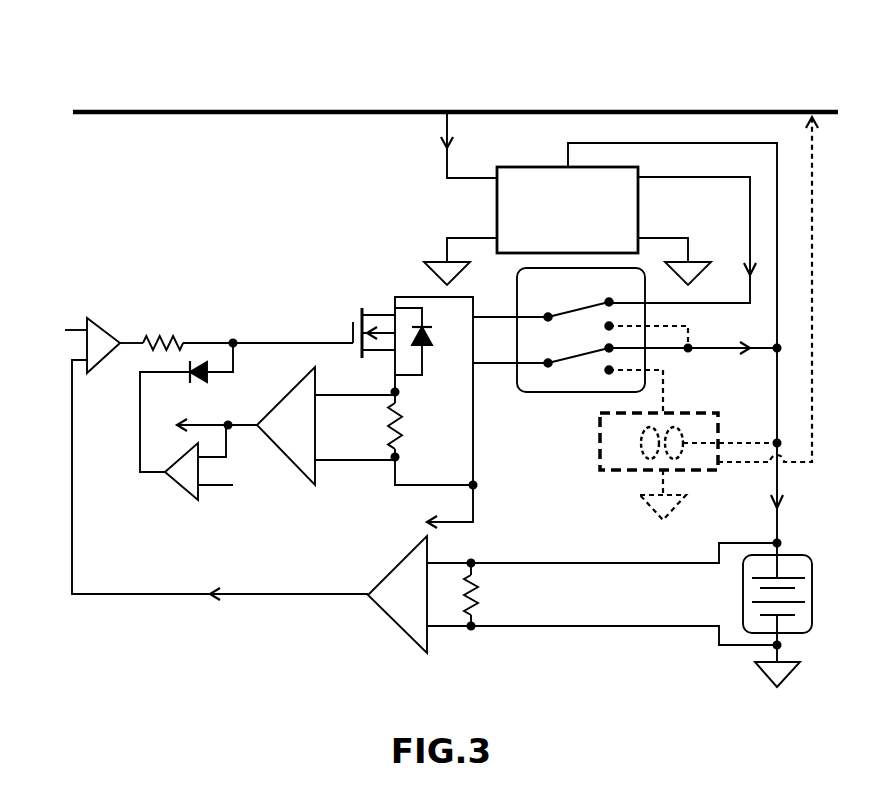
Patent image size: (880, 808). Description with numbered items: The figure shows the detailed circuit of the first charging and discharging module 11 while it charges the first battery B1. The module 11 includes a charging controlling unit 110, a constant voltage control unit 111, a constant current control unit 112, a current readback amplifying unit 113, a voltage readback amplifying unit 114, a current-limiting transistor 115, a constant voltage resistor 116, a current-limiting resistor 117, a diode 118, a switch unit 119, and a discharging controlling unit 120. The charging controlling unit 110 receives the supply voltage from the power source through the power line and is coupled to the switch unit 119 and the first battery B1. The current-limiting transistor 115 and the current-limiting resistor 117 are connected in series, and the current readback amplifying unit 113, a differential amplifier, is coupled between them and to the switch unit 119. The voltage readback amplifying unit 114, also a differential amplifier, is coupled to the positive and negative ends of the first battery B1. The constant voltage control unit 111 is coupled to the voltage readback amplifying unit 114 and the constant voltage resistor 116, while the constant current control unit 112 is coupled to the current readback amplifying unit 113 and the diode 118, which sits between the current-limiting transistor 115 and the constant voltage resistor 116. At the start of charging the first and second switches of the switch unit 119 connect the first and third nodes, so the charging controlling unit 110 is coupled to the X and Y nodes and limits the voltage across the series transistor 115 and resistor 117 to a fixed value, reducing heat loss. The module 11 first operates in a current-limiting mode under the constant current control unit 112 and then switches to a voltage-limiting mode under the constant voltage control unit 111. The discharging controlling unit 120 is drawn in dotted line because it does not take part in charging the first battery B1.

The first charging and discharging module 11 is at (631, 74).
The charging controlling unit 110 is at (508, 167).
The constant voltage control unit 111 is at (92, 318).
The constant current control unit 112 is at (178, 483).
The current readback amplifying unit 113 is at (307, 482).
The voltage readback amplifying unit 114 is at (388, 616).
The current-limiting transistor 115 is at (362, 312).
The constant voltage resistor 116 is at (165, 335).
The current-limiting resistor 117 is at (405, 430).
The diode 118 is at (211, 360).
The switch unit 119 is at (533, 393).
The discharging controlling unit 120 is at (600, 470).
The first battery B1 is at (812, 561).